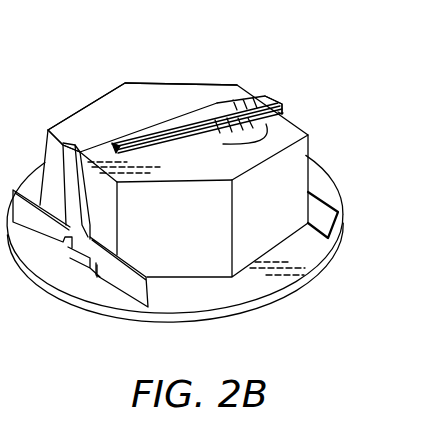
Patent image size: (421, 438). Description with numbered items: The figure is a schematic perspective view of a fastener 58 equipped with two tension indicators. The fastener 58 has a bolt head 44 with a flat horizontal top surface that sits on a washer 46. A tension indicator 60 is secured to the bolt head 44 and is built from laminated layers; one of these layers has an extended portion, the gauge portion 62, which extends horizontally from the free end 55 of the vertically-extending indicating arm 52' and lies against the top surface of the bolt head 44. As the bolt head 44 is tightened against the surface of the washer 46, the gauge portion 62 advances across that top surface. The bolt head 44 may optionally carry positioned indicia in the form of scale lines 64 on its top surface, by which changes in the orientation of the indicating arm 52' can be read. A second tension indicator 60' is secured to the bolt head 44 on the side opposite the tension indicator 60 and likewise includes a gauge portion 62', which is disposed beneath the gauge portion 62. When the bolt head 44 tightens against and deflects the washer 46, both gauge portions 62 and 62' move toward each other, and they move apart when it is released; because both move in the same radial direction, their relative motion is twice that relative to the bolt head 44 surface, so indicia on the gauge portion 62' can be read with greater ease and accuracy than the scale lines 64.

The bolt head 44 is at (208, 83).
The washer 46 is at (233, 295).
The indicating arm 52' is at (92, 248).
The free end 55 is at (74, 144).
The fastener 58 is at (124, 72).
The tension indicator 60 is at (54, 136).
The second tension indicator 60' is at (322, 79).
The gauge portion 62 is at (181, 101).
The gauge portion 62' is at (256, 79).
The scale lines 64 is at (262, 150).